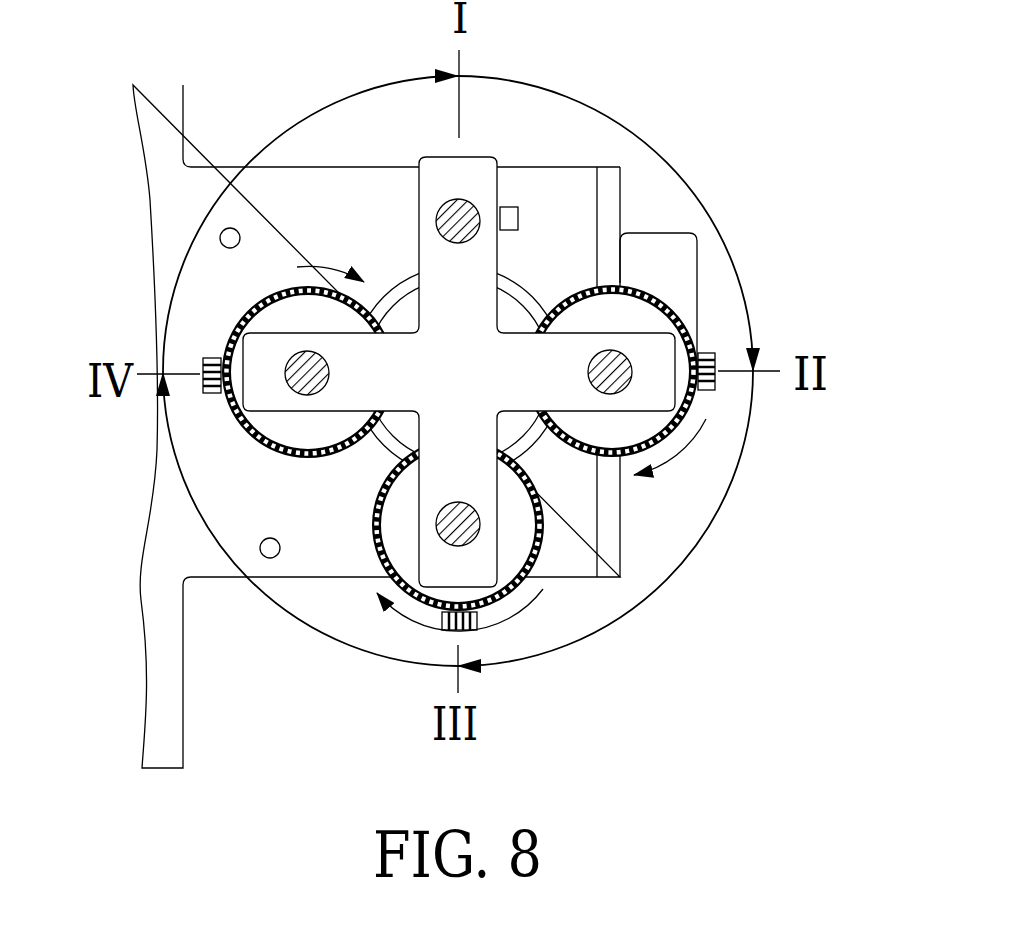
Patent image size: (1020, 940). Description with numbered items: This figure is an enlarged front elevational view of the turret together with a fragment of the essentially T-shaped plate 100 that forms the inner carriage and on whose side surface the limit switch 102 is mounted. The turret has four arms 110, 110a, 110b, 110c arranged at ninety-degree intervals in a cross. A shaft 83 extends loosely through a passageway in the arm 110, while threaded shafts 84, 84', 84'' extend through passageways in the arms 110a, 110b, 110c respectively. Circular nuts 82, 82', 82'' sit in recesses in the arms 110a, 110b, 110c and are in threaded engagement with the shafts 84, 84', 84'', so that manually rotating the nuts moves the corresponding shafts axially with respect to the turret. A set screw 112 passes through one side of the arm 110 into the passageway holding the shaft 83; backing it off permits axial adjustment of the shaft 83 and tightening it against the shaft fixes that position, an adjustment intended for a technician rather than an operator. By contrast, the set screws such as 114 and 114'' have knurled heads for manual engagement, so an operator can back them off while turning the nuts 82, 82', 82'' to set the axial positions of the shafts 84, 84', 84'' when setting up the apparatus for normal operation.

The plate 100 is at (203, 193).
The limit switch 102 is at (680, 257).
The arm 110 is at (477, 175).
The arm 110a is at (577, 352).
The arm 110b is at (352, 380).
The arm 110c is at (473, 483).
The set screw 112 is at (613, 168).
The set screw 114 is at (463, 307).
The set screw 114'' is at (391, 677).
The circular nut 82 is at (654, 420).
The circular nut 82' is at (308, 316).
The circular nut 82'' is at (537, 571).
The shaft 83 is at (514, 220).
The threaded shaft 84 is at (714, 294).
The threaded shaft 84' is at (202, 429).
The threaded shaft 84'' is at (360, 453).